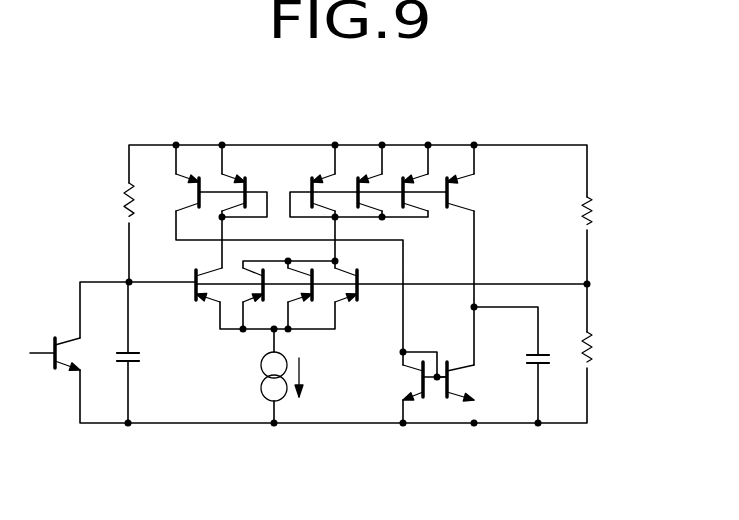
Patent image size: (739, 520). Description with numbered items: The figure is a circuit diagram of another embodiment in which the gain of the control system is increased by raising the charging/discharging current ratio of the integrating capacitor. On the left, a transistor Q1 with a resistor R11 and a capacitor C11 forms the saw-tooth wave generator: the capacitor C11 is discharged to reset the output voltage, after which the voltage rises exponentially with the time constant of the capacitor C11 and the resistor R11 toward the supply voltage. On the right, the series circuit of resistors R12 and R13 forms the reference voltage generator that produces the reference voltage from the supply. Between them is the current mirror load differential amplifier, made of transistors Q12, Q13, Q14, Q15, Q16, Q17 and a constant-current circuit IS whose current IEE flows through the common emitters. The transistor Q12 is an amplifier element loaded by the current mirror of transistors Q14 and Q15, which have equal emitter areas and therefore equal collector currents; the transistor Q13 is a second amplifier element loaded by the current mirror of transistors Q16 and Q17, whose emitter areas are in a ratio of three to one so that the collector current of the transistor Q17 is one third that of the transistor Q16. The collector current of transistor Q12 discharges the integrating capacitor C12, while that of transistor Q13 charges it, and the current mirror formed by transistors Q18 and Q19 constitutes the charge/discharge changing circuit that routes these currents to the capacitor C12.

The input transistor Q1 is at (65, 360).
The transistor Q12 is at (195, 290).
The transistor Q13 is at (364, 290).
The transistor Q14 is at (187, 193).
The transistor Q15 is at (242, 176).
The transistor Q16 is at (332, 190).
The transistor Q17 is at (467, 192).
The transistor Q18 is at (416, 378).
The transistor Q19 is at (455, 377).
The resistor R11 is at (123, 197).
The resistor R12 is at (593, 212).
The resistor R13 is at (592, 347).
The capacitor C11 is at (117, 357).
The capacitor C12 is at (529, 358).
The constant-current circuit IS is at (262, 394).
The emitter current IEE is at (316, 383).